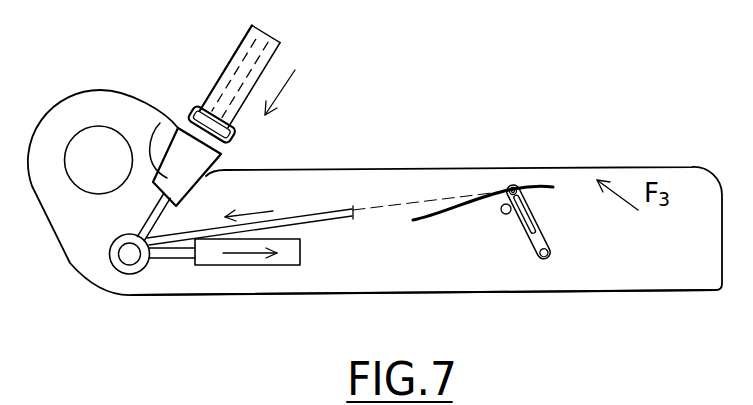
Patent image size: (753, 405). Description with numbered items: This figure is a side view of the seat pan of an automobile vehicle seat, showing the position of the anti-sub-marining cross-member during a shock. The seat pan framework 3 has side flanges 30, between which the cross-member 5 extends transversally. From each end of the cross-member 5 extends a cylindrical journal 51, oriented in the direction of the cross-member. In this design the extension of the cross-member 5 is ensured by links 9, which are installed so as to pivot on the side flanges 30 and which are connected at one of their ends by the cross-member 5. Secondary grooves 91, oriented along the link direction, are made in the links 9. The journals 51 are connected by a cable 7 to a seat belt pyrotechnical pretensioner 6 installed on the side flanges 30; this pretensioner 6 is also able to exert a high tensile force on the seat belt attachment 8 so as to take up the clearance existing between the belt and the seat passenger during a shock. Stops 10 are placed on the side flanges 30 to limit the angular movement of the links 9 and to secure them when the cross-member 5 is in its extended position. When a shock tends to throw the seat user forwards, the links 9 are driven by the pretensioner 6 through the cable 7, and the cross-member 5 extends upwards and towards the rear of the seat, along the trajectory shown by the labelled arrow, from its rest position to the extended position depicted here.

The seat pan framework 3 is at (377, 173).
The side flanges 30 is at (693, 187).
The anti-sub-marining cross-member 5 is at (473, 194).
The cylindrical journals 51 is at (513, 188).
The seat belt pyrotechnical pretensioner 6 is at (218, 266).
The cable 7 is at (328, 232).
The seat belt attachment 8 is at (160, 123).
The links 9 is at (566, 261).
The secondary grooves 91 is at (535, 214).
The stops 10 is at (500, 215).